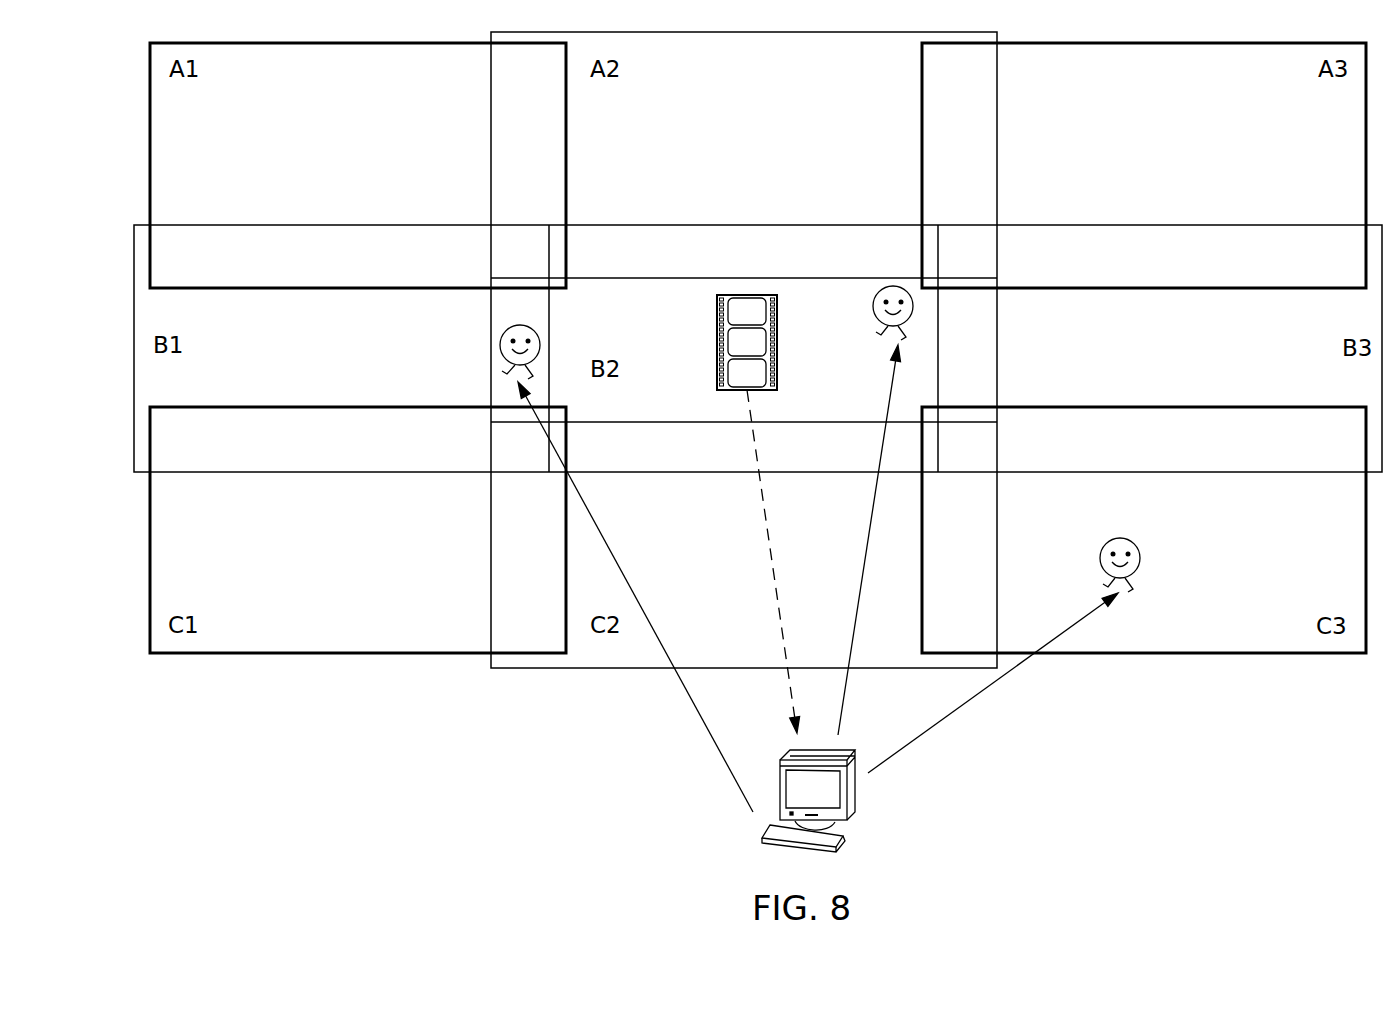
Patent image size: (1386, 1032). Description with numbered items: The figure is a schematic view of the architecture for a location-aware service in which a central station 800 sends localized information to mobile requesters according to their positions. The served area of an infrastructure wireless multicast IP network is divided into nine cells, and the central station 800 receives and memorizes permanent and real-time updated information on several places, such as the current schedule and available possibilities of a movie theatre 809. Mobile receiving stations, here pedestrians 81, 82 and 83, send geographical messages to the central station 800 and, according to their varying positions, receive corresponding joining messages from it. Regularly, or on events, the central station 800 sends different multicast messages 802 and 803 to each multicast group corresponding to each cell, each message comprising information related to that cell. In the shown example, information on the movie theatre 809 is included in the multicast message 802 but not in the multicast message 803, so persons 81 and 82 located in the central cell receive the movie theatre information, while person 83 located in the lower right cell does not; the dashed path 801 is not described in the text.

The pedestrian 81 is at (500, 334).
The pedestrian 82 is at (878, 317).
The pedestrian 83 is at (1137, 545).
The central station 800 is at (853, 792).
The content transmission path 801 is at (773, 565).
The multicast message 802 is at (855, 628).
The multicast message 803 is at (970, 700).
The movie theatre 809 is at (717, 325).